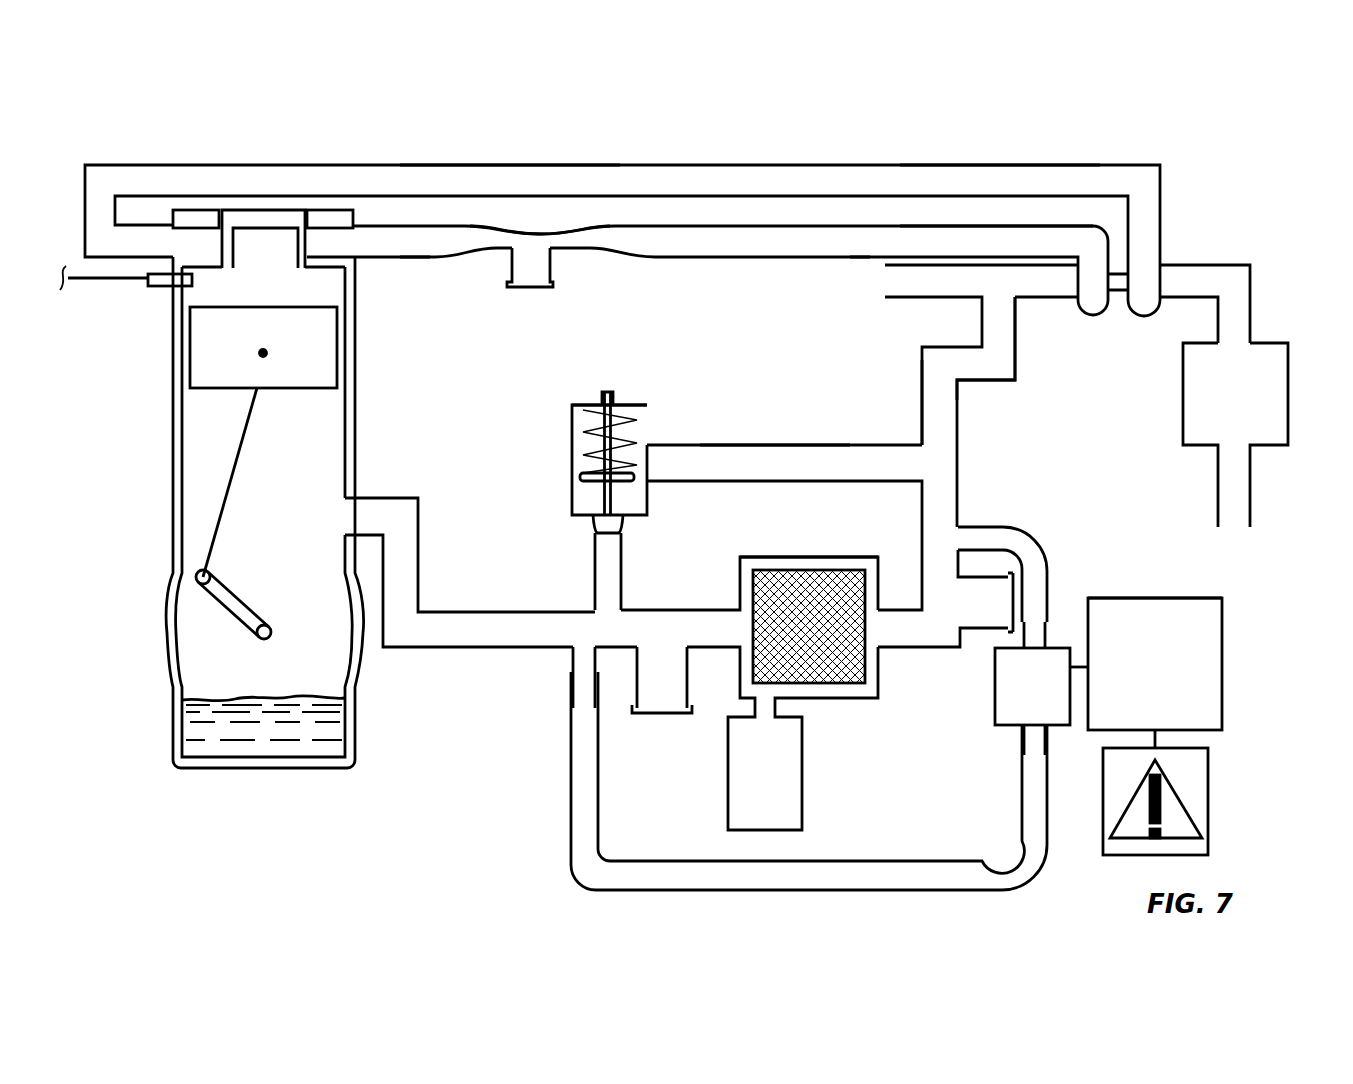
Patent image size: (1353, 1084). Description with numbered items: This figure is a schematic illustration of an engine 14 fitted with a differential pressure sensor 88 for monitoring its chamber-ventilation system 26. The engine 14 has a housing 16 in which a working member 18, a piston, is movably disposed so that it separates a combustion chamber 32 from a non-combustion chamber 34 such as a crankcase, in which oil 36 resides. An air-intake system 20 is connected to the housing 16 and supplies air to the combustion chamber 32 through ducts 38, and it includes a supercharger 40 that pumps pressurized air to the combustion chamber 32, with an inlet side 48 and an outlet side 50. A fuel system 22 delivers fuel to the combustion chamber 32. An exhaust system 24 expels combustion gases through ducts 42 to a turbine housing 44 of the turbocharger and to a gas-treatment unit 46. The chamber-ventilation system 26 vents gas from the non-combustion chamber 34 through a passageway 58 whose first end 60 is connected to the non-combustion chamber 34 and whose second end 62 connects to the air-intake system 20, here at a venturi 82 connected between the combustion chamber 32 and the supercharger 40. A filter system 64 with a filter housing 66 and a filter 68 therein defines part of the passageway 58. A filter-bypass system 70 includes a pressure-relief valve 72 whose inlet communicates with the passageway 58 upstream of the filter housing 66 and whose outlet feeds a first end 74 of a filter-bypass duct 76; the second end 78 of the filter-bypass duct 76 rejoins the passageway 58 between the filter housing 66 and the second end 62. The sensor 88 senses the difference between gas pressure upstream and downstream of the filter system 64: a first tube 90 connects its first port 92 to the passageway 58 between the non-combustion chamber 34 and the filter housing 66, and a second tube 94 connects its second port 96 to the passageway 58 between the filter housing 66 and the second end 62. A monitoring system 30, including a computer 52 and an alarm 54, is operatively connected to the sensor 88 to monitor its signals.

The engine 14 is at (517, 154).
The housing 16 is at (172, 498).
The working member 18 is at (248, 346).
The air-intake system 20 is at (730, 266).
The fuel system 22 is at (148, 288).
The exhaust system 24 is at (966, 132).
The chamber-ventilation system 26 is at (502, 678).
The monitoring system 30 is at (1240, 734).
The combustion chamber 32 is at (247, 298).
The non-combustion chamber 34 is at (247, 495).
The oil 36 is at (287, 745).
The ducts 38 is at (413, 260).
The supercharger 40 is at (1122, 318).
The ducts 42 is at (855, 164).
The turbine housing 44 is at (1158, 257).
The gas-treatment unit 46 is at (1220, 405).
The inlet side 48 is at (930, 296).
The outlet side 50 is at (985, 228).
The computer 52 is at (1140, 678).
The alarm 54 is at (1210, 787).
The passageway 58 is at (591, 641).
The first end 60 is at (343, 532).
The second end 62 is at (553, 275).
The filter system 64 is at (893, 683).
The filter housing 66 is at (848, 700).
The filter 68 is at (792, 680).
The filter-bypass system 70 is at (690, 414).
The pressure-relief valve 72 is at (647, 417).
The first end 74 is at (697, 446).
The filter-bypass duct 76 is at (762, 443).
The second end 78 is at (858, 443).
The venturi 82 is at (517, 232).
The sensor 88 is at (1018, 698).
The first tube 90 is at (683, 875).
The first port 92 is at (1028, 740).
The second tube 94 is at (1030, 548).
The second port 96 is at (1042, 627).